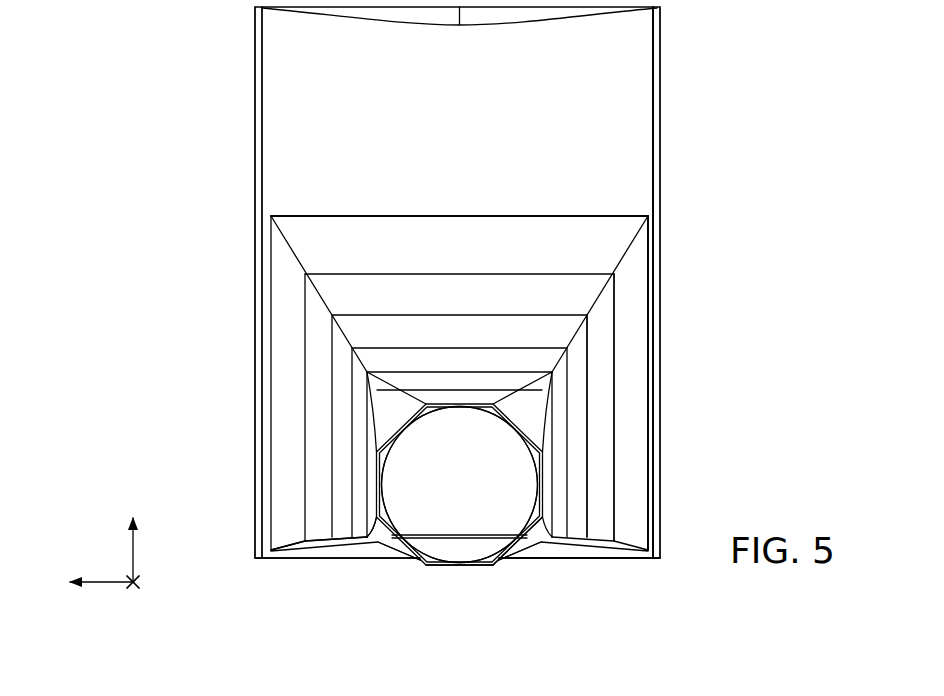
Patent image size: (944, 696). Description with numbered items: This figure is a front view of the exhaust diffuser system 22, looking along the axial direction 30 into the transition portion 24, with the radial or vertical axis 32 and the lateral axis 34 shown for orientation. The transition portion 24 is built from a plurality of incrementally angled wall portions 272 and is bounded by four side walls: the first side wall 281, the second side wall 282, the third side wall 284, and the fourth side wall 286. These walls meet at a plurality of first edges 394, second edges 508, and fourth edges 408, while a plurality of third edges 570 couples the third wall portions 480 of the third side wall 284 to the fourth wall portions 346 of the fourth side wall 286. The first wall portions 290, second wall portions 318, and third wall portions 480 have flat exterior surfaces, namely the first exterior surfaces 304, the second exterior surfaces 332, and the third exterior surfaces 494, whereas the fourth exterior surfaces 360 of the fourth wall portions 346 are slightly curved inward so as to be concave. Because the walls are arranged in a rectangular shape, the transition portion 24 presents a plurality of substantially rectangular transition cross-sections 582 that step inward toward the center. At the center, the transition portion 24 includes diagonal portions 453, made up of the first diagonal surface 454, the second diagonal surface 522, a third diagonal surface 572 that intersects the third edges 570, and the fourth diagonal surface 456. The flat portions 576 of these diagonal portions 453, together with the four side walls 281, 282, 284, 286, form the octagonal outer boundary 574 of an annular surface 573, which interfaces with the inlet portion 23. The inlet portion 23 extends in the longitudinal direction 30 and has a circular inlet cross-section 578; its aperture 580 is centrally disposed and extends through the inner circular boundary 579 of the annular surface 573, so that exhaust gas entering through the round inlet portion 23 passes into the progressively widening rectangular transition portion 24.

The exhaust diffuser system 22 is at (745, 78).
The inlet portion 23 is at (392, 478).
The transition portion 24 is at (726, 308).
The axial direction or axis 30 is at (135, 589).
The radial or vertical direction or axis 32 is at (132, 540).
The lateral direction or axis 34 is at (90, 588).
The incrementally angled wall portions 272 is at (714, 290).
The first side wall 281 is at (677, 380).
The second side wall 282 is at (486, 197).
The third side wall 284 is at (242, 379).
The fourth side wall 286 is at (456, 577).
The first wall portions 290 is at (665, 352).
The first exterior surfaces 304 is at (687, 414).
The second wall portions 318 is at (398, 197).
The second exterior surfaces 332 is at (560, 200).
The fourth wall portions 346 is at (360, 568).
The fourth exterior surfaces 360 is at (600, 573).
The first edges 394 is at (673, 201).
The fourth edges 408 is at (656, 566).
The diagonal portions 453 is at (562, 569).
The first diagonal surface 454 is at (525, 410).
The fourth diagonal surface 456 is at (519, 553).
The third wall portions 480 is at (250, 352).
The third exterior surfaces 494 is at (249, 424).
The second edges 508 is at (250, 200).
The second diagonal surface 522 is at (392, 410).
The third edges 570 is at (268, 566).
The third diagonal surface 572 is at (378, 539).
The annular surface 573 is at (482, 566).
The octagonal outer boundary 574 is at (402, 552).
The flat portions 576 is at (496, 423).
The inlet cross-section 578 is at (530, 503).
The inner boundary 579 is at (383, 484).
The aperture 580 is at (452, 434).
The transition cross-sections 582 is at (632, 460).